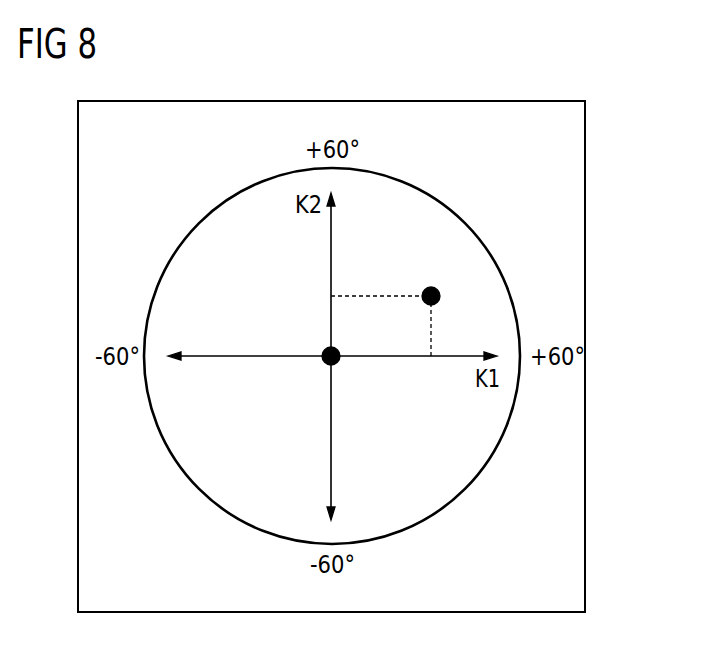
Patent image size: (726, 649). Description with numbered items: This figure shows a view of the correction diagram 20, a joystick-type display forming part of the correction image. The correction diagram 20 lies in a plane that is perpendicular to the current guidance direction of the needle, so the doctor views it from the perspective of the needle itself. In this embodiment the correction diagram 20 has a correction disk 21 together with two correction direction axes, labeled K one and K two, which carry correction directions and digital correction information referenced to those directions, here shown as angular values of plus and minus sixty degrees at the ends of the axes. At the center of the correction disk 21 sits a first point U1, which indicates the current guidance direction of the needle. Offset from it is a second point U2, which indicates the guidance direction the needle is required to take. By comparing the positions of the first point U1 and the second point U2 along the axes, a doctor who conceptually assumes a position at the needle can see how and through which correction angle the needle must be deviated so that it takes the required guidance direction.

The correction diagram 20 is at (570, 157).
The correction disk 21 is at (447, 237).
The first point U1 is at (325, 363).
The second point U2 is at (428, 288).